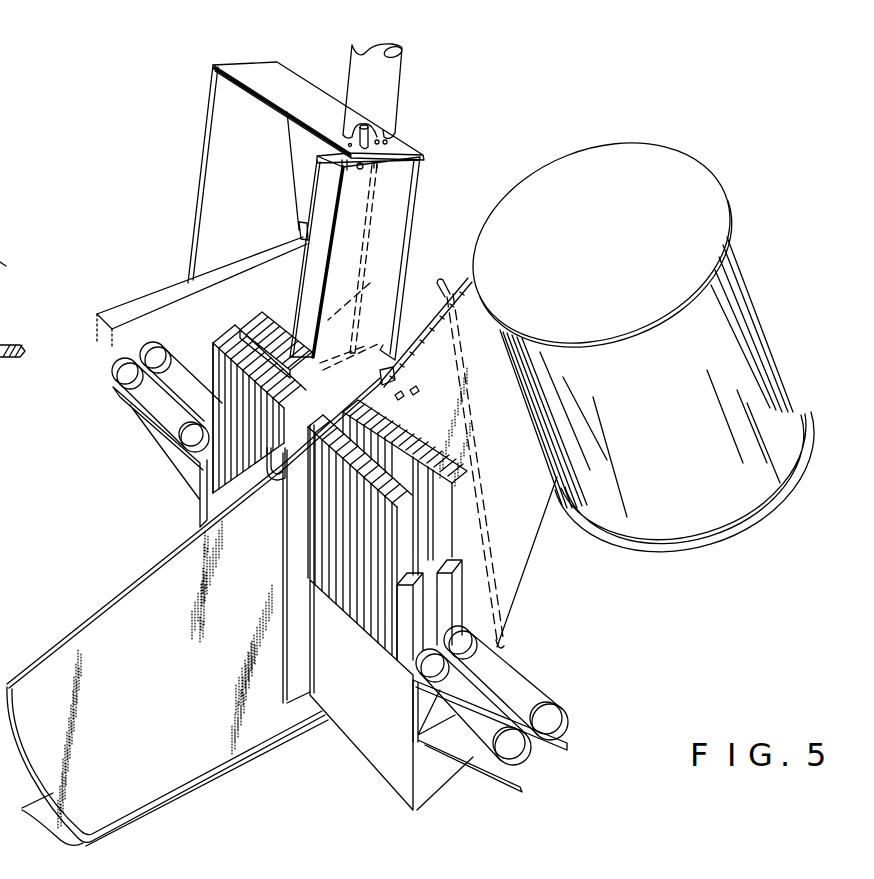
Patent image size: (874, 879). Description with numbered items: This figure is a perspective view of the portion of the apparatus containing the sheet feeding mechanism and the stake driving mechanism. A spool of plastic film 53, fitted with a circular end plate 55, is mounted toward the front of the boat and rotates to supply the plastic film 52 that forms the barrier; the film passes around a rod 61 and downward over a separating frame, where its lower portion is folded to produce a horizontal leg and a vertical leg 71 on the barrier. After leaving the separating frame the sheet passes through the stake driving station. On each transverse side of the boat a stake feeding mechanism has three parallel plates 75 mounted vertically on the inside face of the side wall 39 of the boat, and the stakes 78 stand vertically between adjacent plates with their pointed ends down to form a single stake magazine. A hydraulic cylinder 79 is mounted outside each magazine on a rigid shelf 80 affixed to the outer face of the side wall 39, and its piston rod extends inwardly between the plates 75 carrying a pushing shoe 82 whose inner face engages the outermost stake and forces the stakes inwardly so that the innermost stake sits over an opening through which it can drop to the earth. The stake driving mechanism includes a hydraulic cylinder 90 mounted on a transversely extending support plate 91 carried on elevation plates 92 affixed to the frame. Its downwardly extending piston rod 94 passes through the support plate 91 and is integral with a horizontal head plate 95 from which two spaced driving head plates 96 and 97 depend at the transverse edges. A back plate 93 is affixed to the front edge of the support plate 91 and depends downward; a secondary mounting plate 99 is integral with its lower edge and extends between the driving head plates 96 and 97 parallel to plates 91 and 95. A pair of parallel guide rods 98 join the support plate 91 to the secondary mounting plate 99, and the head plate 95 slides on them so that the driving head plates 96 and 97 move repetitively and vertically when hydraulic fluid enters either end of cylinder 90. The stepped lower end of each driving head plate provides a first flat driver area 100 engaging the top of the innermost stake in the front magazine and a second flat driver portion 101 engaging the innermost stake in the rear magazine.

The side wall 39 is at (433, 777).
The plastic film 52 is at (433, 350).
The spool of plastic film 53 is at (718, 310).
The circular end plate 55 is at (687, 180).
The rod 61 is at (444, 290).
The vertical leg 71 is at (233, 330).
The parallel plates 75 is at (378, 748).
The stakes 78 is at (445, 507).
The hydraulic cylinder 79 is at (180, 377).
The rigid shelf 80 is at (520, 780).
The shoe 82 is at (290, 490).
The hydraulic cylinder 90 is at (393, 87).
The support plate 91 is at (290, 87).
The elevation plates 92 is at (207, 211).
The back plate 93 is at (400, 217).
The piston rod 94 is at (387, 137).
The head plate 95 is at (332, 163).
The driving head plate 96 is at (377, 260).
The driving head plate 97 is at (313, 303).
The guide rods 98 is at (370, 283).
The secondary mounting plate 99 is at (380, 347).
The first flat driver area 100 is at (395, 376).
The second flat driver portion 101 is at (360, 396).